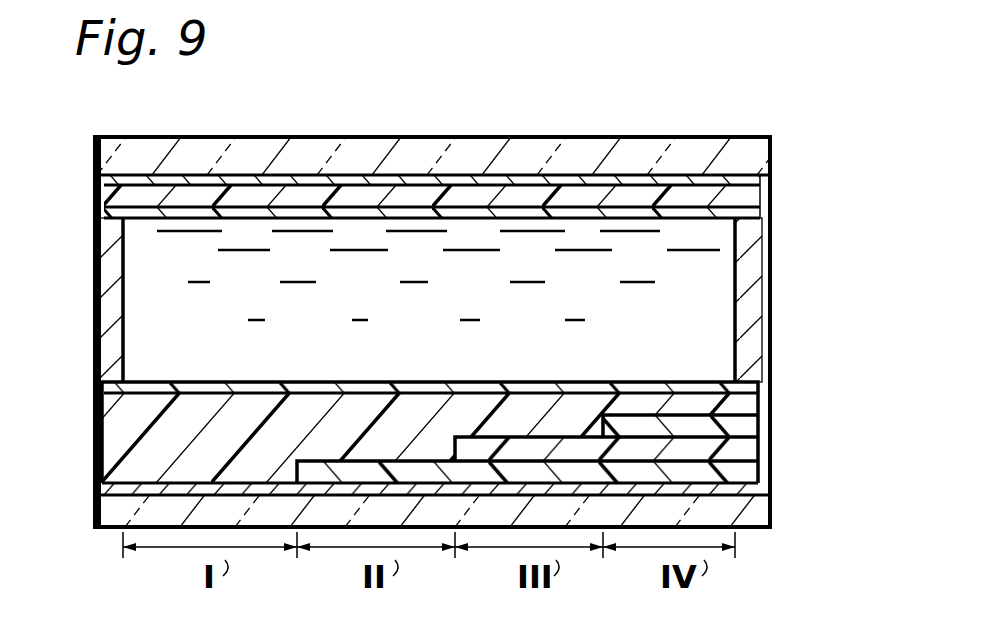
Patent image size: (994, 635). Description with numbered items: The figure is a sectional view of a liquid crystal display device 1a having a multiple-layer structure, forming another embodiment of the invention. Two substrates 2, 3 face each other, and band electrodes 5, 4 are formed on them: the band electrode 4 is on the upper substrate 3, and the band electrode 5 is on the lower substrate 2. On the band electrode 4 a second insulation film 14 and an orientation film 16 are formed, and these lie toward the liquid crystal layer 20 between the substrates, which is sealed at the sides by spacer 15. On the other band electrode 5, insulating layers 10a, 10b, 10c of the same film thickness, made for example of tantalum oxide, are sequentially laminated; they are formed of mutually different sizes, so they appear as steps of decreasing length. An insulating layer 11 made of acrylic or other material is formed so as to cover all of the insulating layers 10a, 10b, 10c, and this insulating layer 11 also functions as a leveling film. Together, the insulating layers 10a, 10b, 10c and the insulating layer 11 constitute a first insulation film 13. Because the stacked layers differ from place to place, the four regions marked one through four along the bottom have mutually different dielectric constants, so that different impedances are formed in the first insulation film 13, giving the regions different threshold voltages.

The liquid crystal display device 1a is at (808, 140).
The substrate 2 is at (765, 517).
The substrate 3 is at (256, 148).
The band electrode 4 is at (366, 183).
The band electrode 5 is at (122, 494).
The insulating layer 10a is at (757, 470).
The insulating layer 10b is at (757, 440).
The insulating layer 10c is at (757, 414).
The insulating layer 11 is at (115, 431).
The first insulation film 13 is at (598, 420).
The second insulation film 14 is at (622, 200).
The spacer seal 15 is at (148, 383).
The orientation film 16 is at (760, 213).
The liquid crystal layer 20 is at (713, 291).